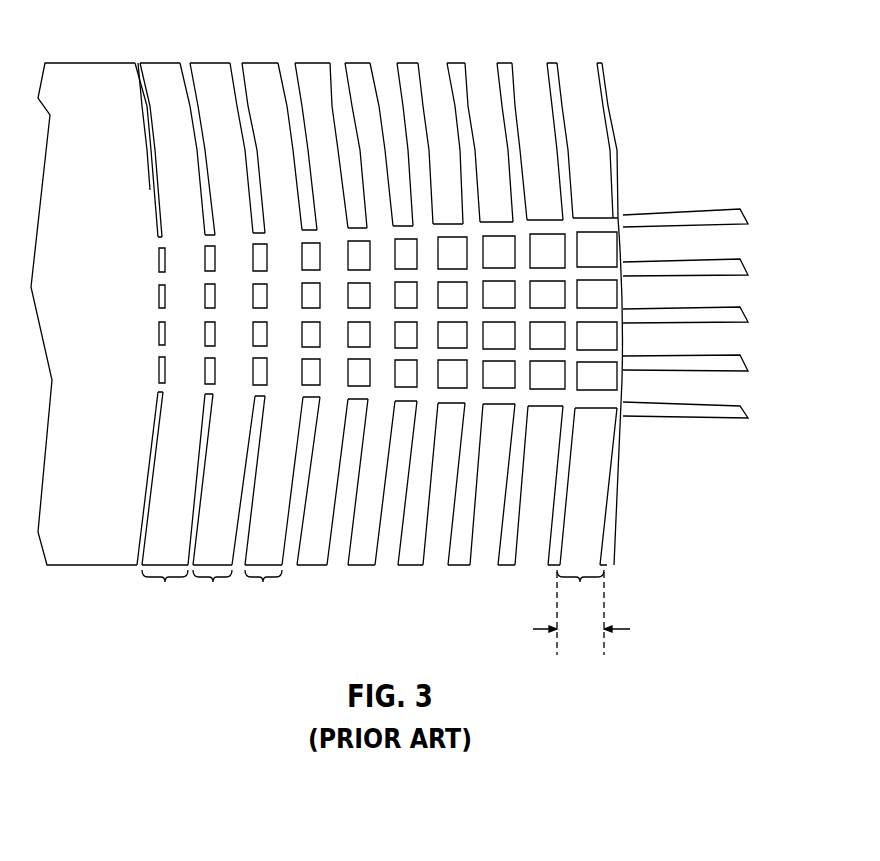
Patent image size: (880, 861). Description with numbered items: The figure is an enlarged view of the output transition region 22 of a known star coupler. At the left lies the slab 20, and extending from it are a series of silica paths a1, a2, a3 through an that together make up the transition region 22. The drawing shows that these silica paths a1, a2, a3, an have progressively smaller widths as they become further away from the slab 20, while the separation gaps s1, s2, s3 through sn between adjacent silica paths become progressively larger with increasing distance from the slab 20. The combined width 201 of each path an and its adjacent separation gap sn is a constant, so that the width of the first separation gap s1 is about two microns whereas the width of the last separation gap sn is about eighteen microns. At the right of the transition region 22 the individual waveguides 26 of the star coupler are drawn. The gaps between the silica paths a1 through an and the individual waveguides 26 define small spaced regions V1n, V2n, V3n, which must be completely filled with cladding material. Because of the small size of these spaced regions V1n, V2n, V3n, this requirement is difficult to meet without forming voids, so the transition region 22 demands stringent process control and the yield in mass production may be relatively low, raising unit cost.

The slab 20 is at (89, 340).
The transition region 22 is at (133, 53).
The individual waveguides 26 is at (757, 210).
The combined width 201 is at (386, 612).
The spaced region V1n is at (595, 243).
The spaced region V2n is at (600, 292).
The spaced region V3n is at (607, 337).
The first silica path a1 is at (181, 527).
The second silica path a2 is at (232, 527).
The third silica path a3 is at (283, 527).
The nth silica path an is at (612, 508).
The first separation gap s1 is at (138, 552).
The second separation gap s2 is at (192, 543).
The third separation gap s3 is at (243, 542).
The nth separation gap sn is at (600, 455).